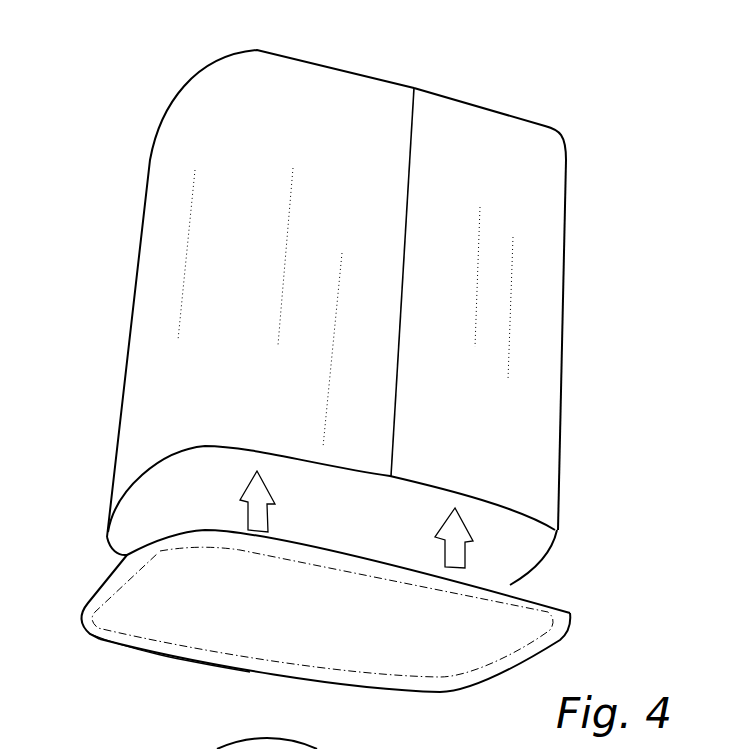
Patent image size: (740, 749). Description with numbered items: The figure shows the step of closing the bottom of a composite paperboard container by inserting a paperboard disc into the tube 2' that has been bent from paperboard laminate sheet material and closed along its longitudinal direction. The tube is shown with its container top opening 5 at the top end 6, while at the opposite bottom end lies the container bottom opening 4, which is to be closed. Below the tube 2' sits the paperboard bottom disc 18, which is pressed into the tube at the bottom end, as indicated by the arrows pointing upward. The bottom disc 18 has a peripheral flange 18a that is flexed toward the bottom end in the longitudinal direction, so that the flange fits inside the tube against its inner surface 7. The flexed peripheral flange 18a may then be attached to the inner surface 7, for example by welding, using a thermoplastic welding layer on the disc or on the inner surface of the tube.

The container top opening 5 is at (441, 84).
The top end 6 is at (550, 133).
The tube 2' is at (599, 345).
The container bottom opening 4 is at (168, 498).
The inner surface 7 is at (533, 535).
The paperboard bottom disc 18 is at (533, 630).
The peripheral flange 18a is at (150, 643).